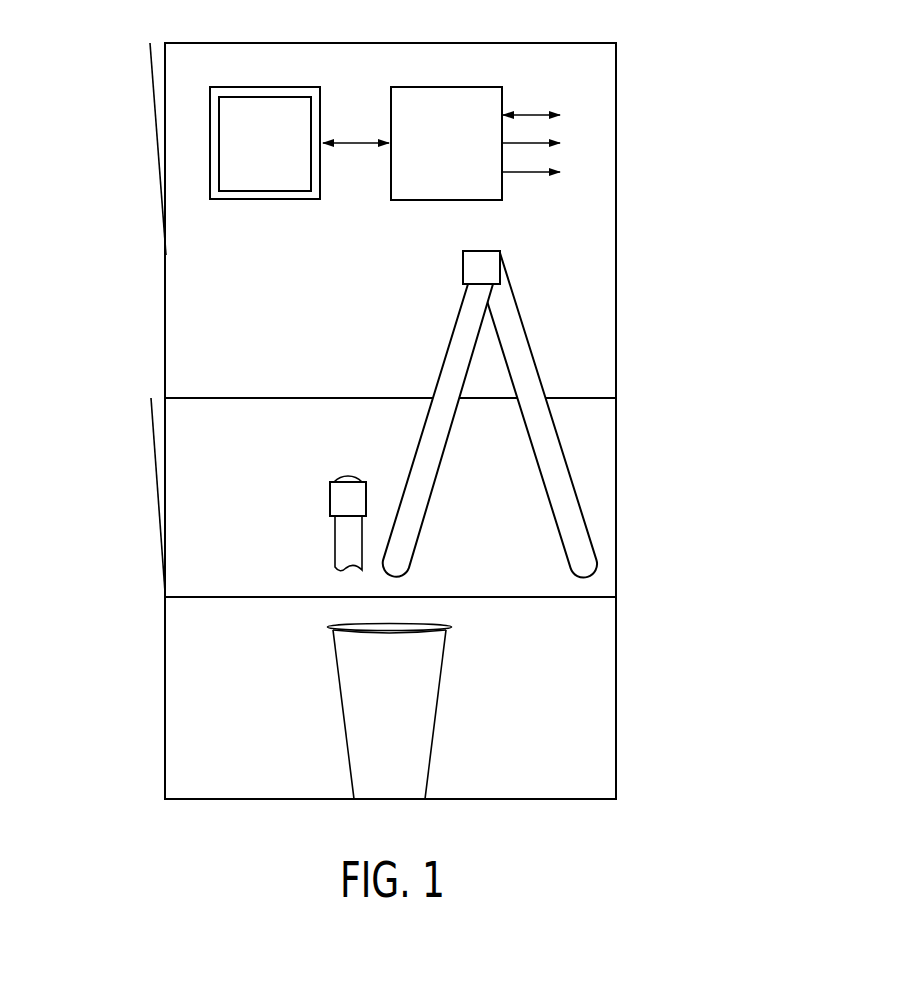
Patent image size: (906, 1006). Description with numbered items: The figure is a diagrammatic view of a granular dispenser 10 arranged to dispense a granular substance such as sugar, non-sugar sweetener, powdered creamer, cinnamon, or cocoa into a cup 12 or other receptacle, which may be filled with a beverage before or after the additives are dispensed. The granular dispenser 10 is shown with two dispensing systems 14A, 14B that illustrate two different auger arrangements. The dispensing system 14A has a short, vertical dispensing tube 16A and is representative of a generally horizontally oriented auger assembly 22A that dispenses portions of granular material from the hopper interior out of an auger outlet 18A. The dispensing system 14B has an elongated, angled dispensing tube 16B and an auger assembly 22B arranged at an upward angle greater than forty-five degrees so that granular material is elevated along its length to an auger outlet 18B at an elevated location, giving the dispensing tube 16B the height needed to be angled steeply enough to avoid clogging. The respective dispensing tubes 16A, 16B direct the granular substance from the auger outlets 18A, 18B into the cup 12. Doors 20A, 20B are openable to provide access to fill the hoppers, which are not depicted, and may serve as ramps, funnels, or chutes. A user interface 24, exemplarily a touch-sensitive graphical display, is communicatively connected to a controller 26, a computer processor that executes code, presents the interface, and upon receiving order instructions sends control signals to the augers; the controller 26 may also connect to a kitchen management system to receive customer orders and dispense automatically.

The granular dispenser 10 is at (681, 93).
The cup 12 is at (415, 692).
The dispensing system 14A is at (289, 499).
The dispensing system 14B is at (538, 399).
The dispensing tube 16A is at (332, 542).
The dispensing tube 16B is at (470, 322).
The auger outlet 18A is at (330, 500).
The auger outlet 18B is at (487, 262).
The door 20A is at (154, 91).
The door 20B is at (153, 447).
The auger assembly 22A is at (348, 478).
The auger assembly 22B is at (573, 482).
The user interface 24 is at (263, 87).
The controller 26 is at (447, 87).